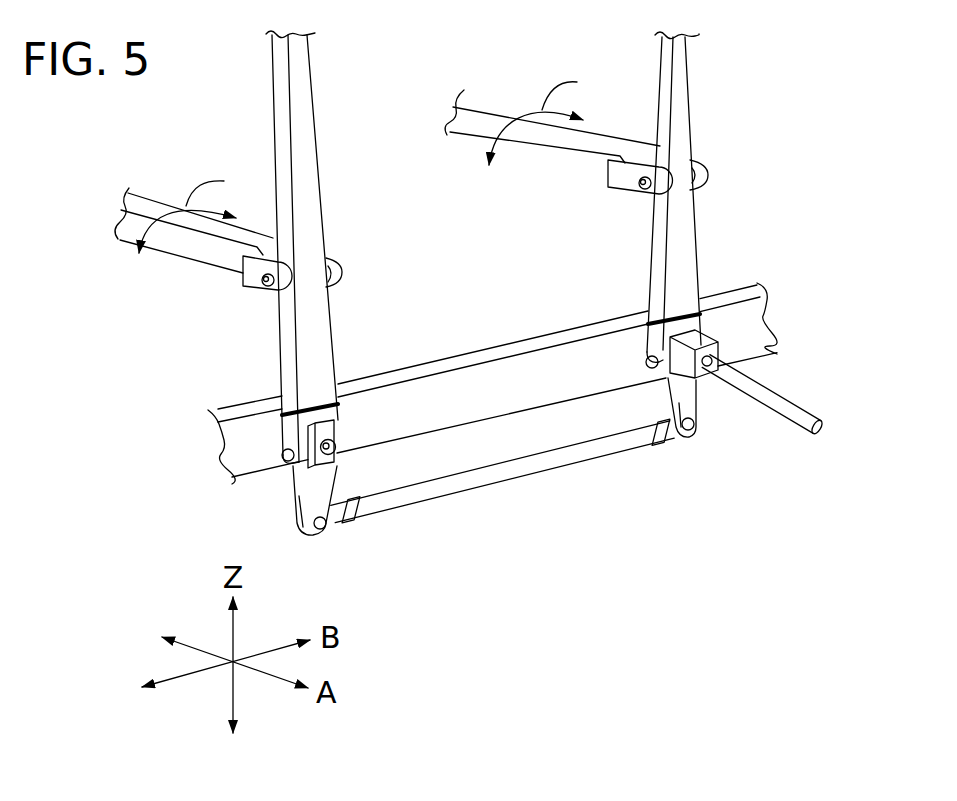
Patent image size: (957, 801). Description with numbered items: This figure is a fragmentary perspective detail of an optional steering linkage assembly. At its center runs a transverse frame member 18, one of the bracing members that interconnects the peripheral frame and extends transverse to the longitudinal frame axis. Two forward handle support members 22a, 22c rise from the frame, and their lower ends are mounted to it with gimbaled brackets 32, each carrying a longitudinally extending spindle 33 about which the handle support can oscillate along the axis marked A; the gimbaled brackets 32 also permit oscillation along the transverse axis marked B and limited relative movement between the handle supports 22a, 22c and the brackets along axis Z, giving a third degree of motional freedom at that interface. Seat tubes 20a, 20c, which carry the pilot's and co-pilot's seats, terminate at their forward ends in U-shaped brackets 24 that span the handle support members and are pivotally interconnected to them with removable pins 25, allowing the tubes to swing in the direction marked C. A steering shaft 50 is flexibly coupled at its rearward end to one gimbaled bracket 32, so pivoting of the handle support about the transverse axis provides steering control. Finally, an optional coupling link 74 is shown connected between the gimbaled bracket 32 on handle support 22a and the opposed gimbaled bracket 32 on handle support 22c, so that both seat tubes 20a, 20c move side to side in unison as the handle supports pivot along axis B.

The transverse frame member 18 is at (478, 358).
The seat tube 20a is at (474, 106).
The seat tube 20c is at (200, 243).
The handle support member 22a is at (683, 257).
The handle support member 22c is at (297, 90).
The U-shaped bracket 24 is at (333, 258).
The removable pin 25 is at (263, 284).
The gimbaled bracket 32 is at (323, 484).
The spindle 33 is at (338, 447).
The steering shaft 50 is at (800, 405).
The coupling link 74 is at (492, 473).